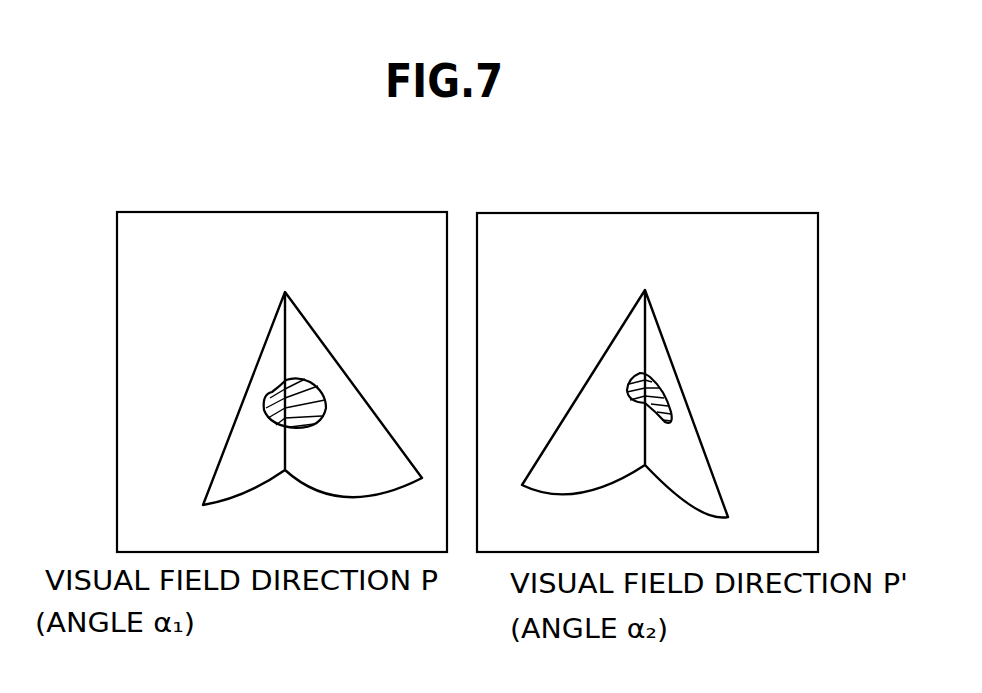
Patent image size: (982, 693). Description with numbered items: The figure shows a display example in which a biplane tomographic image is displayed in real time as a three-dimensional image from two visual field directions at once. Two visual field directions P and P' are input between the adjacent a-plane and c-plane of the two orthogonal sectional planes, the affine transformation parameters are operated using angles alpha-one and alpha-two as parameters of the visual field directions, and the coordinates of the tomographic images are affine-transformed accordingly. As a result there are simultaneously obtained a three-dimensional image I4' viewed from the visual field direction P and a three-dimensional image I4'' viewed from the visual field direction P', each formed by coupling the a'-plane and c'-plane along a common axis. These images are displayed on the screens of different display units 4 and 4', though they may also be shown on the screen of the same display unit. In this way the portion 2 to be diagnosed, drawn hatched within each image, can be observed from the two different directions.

The display unit 4 is at (282, 356).
The display unit 4' is at (647, 359).
The portion to be diagnosed 2 is at (266, 398).
The three-dimensional image I4' is at (289, 398).
The three-dimensional image I4'' is at (651, 404).